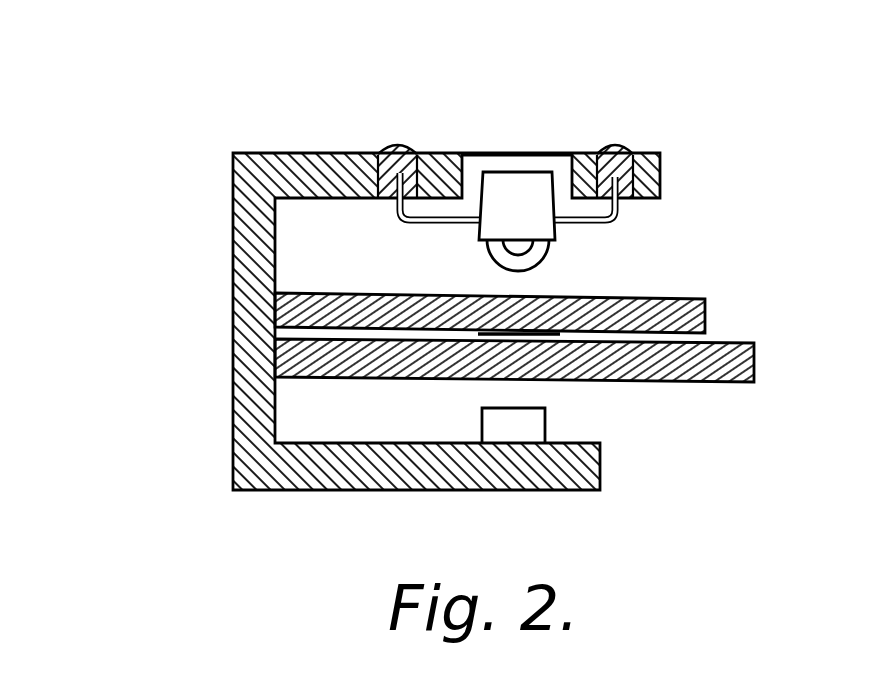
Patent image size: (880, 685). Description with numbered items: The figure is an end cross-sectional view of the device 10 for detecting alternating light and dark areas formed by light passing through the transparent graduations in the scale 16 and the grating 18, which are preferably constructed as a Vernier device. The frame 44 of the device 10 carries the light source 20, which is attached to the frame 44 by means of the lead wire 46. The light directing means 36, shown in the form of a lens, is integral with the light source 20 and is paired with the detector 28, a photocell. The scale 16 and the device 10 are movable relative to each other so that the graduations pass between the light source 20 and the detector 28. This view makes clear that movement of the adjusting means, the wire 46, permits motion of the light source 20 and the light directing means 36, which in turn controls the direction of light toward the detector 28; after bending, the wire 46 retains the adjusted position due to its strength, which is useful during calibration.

The device 10 is at (435, 276).
The frame 44 is at (235, 241).
The light source 20 is at (520, 172).
The lead wire 46 is at (395, 207).
The light directing means 36 is at (535, 257).
The grating 18 is at (680, 298).
The scale 16 is at (733, 383).
The detector 28 is at (545, 423).